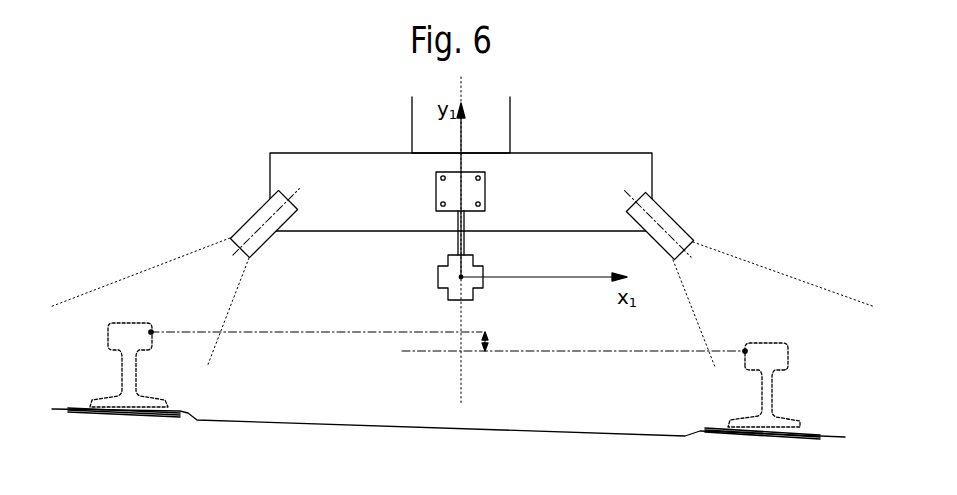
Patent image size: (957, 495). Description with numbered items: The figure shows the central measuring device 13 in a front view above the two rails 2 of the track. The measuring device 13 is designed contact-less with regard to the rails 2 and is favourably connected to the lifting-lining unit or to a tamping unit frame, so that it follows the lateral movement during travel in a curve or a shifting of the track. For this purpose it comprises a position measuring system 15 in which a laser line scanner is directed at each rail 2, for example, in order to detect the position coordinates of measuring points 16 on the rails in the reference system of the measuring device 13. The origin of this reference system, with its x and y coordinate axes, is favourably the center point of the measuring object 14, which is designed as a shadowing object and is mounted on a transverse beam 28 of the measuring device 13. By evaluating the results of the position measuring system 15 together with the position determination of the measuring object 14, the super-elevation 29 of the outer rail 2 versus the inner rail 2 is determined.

The rail 2 is at (122, 344).
The central measuring device 13 is at (571, 124).
The measuring object 14 is at (443, 277).
The position measuring system 15 is at (255, 216).
The measuring point 16 is at (151, 331).
The transverse beam 28 is at (641, 158).
The super-elevation 29 is at (488, 341).